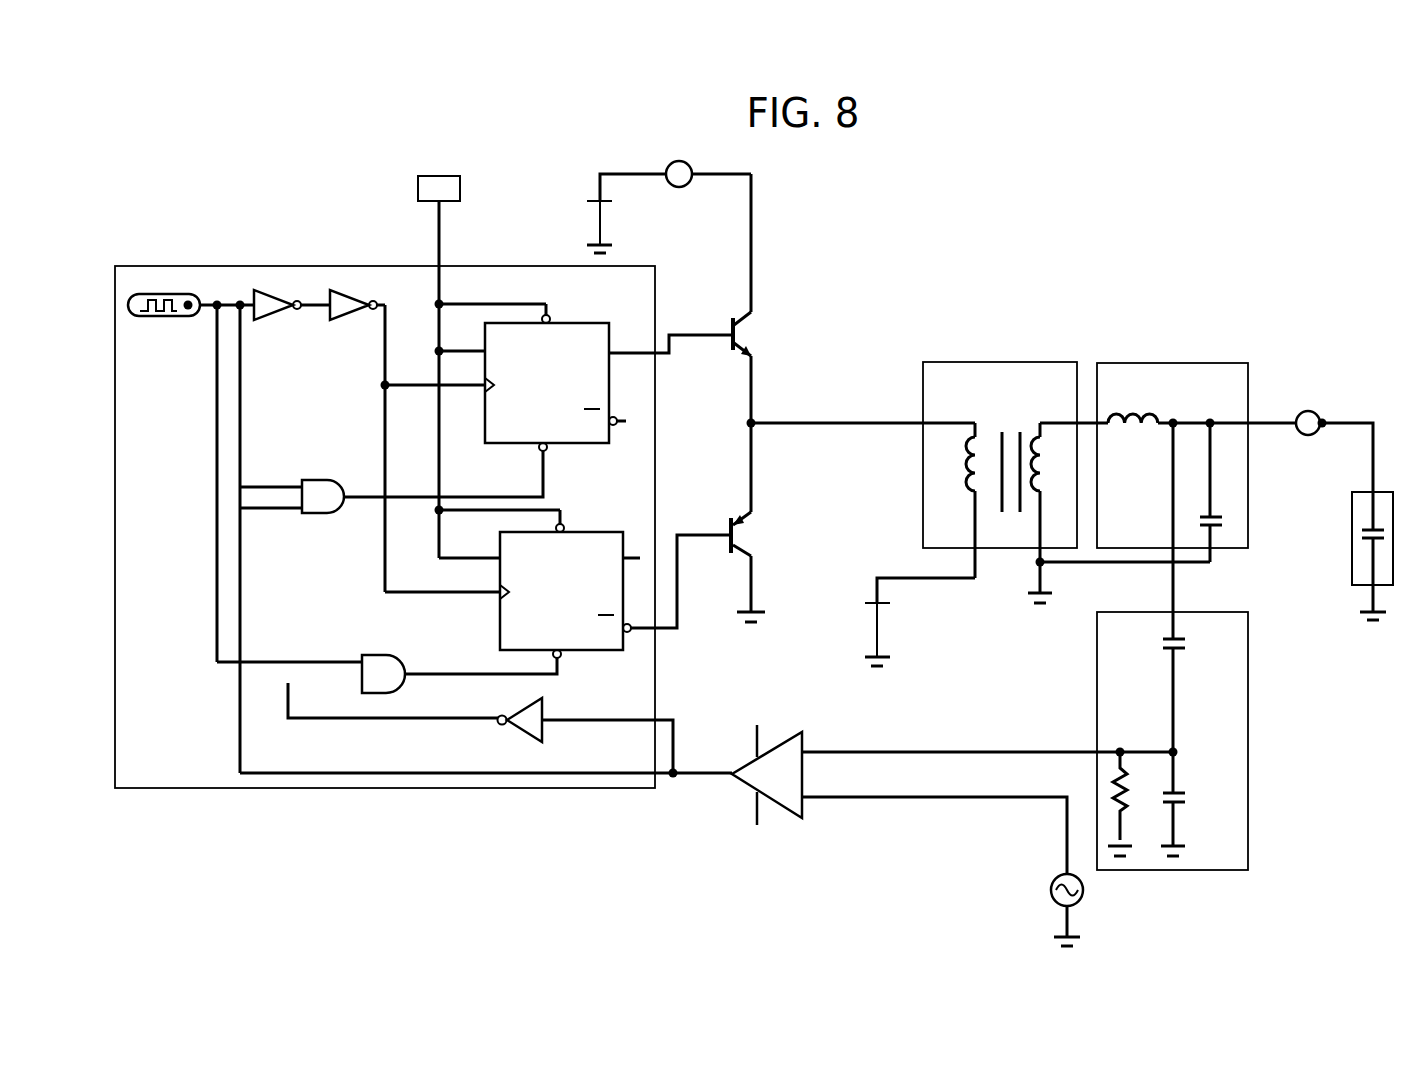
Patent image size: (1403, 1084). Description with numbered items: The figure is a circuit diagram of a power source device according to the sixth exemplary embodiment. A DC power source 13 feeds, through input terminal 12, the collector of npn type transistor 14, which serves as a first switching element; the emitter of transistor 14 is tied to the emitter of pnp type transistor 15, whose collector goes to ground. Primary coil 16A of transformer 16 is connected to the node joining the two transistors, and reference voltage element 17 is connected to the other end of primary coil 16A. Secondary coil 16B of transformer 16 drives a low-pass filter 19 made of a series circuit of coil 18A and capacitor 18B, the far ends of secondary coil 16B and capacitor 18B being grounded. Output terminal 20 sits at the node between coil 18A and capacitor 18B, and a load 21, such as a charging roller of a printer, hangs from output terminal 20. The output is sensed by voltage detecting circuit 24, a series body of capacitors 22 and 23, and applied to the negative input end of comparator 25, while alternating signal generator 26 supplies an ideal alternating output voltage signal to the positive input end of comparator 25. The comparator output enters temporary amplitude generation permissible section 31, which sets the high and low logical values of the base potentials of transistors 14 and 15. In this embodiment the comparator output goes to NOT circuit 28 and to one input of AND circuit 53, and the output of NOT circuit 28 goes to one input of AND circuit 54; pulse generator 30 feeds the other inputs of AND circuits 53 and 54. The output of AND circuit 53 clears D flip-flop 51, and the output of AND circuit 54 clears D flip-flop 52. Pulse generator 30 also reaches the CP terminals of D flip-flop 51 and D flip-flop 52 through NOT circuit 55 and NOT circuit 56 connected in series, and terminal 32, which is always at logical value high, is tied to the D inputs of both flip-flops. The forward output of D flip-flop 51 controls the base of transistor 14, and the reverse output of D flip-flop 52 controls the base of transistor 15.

The input terminal 12 is at (682, 188).
The DC power source 13 is at (583, 210).
The npn type transistor 14 is at (750, 332).
The pnp type transistor 15 is at (750, 533).
The transformer 16 is at (994, 454).
The primary coil 16A is at (968, 437).
The secondary coil 16B is at (1032, 437).
The reference voltage element 17 is at (863, 610).
The coil 18A is at (1135, 407).
The capacitor 18B is at (1228, 518).
The low-pass filter 19 is at (1209, 433).
The output terminal 20 is at (1313, 413).
The load 21 is at (1350, 555).
The capacitor 22 is at (1192, 647).
The capacitor 23 is at (1192, 800).
The voltage detecting circuit 24 is at (1055, 646).
The comparator 25 is at (750, 788).
The alternating signal generator 26 is at (1047, 890).
The NOT circuit 28 is at (522, 735).
The pulse generator 30 is at (165, 320).
The temporary amplitude generation permissible section 31 is at (171, 262).
The terminal 32 is at (442, 172).
The D flip-flop 51 is at (567, 447).
The D flip-flop 52 is at (590, 650).
The AND circuit 53 is at (313, 477).
The AND circuit 54 is at (385, 653).
The NOT circuit 55 is at (271, 262).
The NOT circuit 56 is at (344, 262).